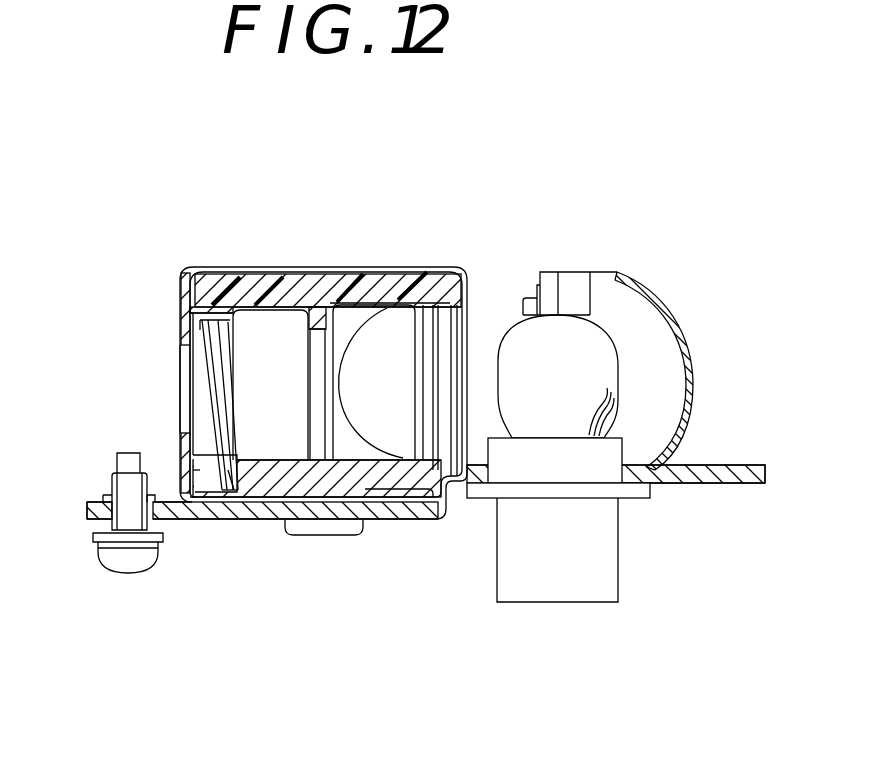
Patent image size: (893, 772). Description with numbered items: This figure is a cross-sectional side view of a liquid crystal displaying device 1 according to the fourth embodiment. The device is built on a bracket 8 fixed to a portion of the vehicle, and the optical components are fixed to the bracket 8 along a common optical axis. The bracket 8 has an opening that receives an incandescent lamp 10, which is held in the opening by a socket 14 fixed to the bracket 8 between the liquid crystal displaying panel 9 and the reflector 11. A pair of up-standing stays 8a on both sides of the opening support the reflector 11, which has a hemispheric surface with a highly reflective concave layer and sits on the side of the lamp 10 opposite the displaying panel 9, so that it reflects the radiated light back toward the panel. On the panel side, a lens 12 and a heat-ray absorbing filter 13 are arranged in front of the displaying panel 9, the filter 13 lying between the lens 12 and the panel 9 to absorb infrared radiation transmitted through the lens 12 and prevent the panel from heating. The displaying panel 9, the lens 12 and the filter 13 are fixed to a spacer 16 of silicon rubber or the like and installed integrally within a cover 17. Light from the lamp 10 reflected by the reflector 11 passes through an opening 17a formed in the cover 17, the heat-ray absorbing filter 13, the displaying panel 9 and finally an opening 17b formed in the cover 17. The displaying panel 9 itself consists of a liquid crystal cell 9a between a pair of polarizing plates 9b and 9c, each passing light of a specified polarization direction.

The liquid crystal displaying device 1 is at (490, 232).
The bracket 8 is at (725, 477).
The stays 8a is at (547, 278).
The liquid crystal displaying panel 9 is at (202, 267).
The liquid crystal cell 9a is at (233, 418).
The polarizing plate 9b is at (245, 460).
The polarizing plate 9c is at (195, 440).
The incandescent lamp 10 is at (588, 280).
The reflector 11 is at (678, 280).
The lens 12 is at (377, 267).
The heat-ray absorbing filter 13 is at (318, 267).
The socket 14 is at (548, 602).
The spacer 16 is at (260, 267).
The cover 17 is at (427, 267).
The opening 17a is at (462, 413).
The opening 17b is at (182, 361).